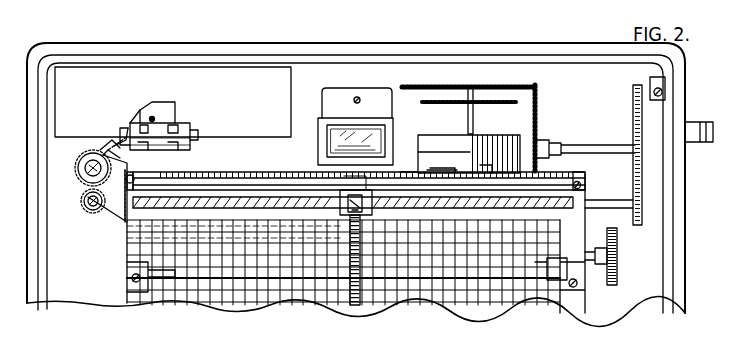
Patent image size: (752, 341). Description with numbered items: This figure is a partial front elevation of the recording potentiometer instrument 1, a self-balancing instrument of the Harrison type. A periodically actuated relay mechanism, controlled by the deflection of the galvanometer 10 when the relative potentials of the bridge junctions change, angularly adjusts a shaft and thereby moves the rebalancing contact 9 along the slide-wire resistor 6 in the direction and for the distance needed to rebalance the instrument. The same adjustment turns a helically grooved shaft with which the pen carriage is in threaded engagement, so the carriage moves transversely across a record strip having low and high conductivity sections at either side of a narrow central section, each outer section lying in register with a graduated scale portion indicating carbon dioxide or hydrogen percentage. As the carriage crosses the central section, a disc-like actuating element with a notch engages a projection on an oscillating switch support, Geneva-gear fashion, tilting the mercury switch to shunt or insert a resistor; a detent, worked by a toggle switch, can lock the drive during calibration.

The recording instrument 1 is at (712, 215).
The slide-wire resistor 6 is at (441, 170).
The rebalancing contact 9 is at (515, 217).
The galvanometer 10 is at (375, 88).